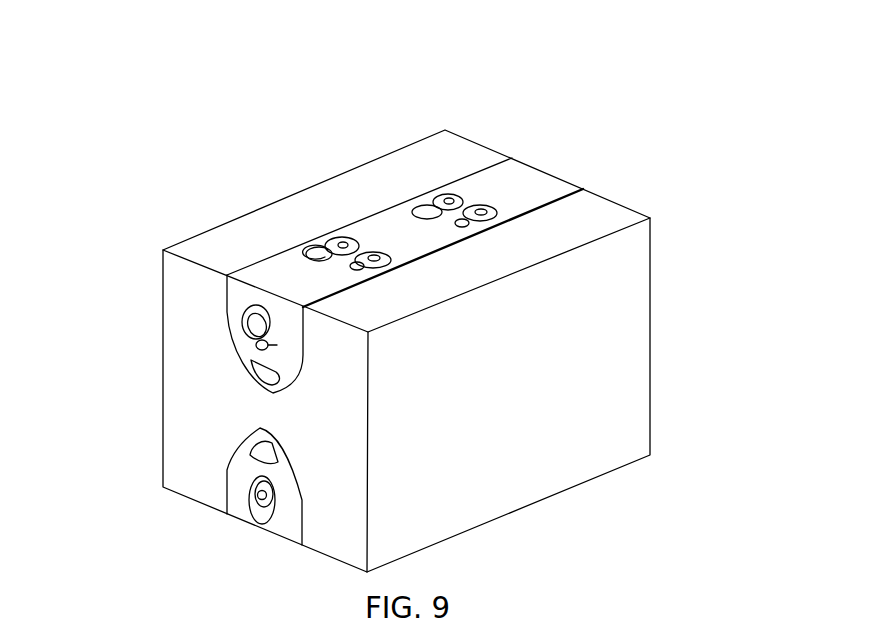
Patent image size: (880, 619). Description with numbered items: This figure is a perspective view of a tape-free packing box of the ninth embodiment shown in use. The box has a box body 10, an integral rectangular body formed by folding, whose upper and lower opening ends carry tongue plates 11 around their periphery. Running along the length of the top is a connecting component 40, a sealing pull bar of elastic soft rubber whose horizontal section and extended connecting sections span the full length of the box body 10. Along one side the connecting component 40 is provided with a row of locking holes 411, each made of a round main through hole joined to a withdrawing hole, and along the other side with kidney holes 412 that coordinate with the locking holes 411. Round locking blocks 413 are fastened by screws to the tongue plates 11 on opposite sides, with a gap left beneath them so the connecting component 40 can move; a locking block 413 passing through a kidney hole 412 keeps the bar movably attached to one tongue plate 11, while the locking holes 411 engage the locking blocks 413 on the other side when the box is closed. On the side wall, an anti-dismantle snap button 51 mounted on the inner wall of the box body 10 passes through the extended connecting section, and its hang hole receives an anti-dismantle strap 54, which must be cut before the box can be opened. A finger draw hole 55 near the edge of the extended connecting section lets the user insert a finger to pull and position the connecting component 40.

The box body 10 is at (617, 363).
The tongue plate 11 is at (570, 227).
The connecting component 40 is at (513, 190).
The locking hole 411 is at (305, 248).
The kidney hole 412 is at (450, 210).
The locking block 413 is at (330, 238).
The anti-dismantle snap button 51 is at (242, 313).
The anti-dismantle strap 54 is at (253, 347).
The finger draw hole 55 is at (267, 366).